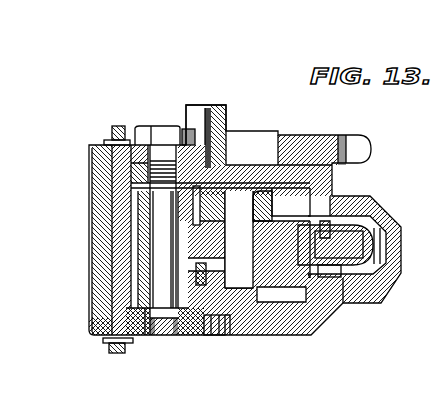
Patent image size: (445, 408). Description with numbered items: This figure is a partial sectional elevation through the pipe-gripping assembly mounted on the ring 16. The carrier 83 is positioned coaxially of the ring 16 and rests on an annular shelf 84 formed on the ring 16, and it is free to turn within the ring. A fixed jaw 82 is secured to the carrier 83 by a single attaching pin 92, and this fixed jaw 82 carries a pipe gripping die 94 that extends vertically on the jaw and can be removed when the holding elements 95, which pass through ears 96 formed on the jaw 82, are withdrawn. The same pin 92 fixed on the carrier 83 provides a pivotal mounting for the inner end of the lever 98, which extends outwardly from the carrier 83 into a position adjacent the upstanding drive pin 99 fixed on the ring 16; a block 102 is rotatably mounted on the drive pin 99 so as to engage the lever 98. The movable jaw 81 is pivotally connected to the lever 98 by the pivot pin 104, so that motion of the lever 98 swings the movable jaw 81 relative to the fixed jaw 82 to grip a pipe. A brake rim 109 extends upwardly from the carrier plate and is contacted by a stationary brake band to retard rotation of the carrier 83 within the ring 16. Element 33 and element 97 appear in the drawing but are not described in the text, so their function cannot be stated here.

The ring 16 is at (310, 324).
The arm 33 is at (352, 136).
The movable jaw 81 is at (266, 191).
The fixed jaw 82 is at (113, 224).
The carrier 83 is at (207, 306).
The annular shelf 84 is at (218, 308).
The attaching pin 92 is at (154, 197).
The pipe gripping die 94 is at (90, 268).
The holding element 95 is at (100, 132).
The ear 96 is at (112, 118).
The nut 97 is at (151, 140).
The lever 98 is at (372, 211).
The drive pin 99 is at (336, 298).
The block 102 is at (340, 237).
The pivot pin 104 is at (226, 200).
The brake rim 109 is at (212, 97).